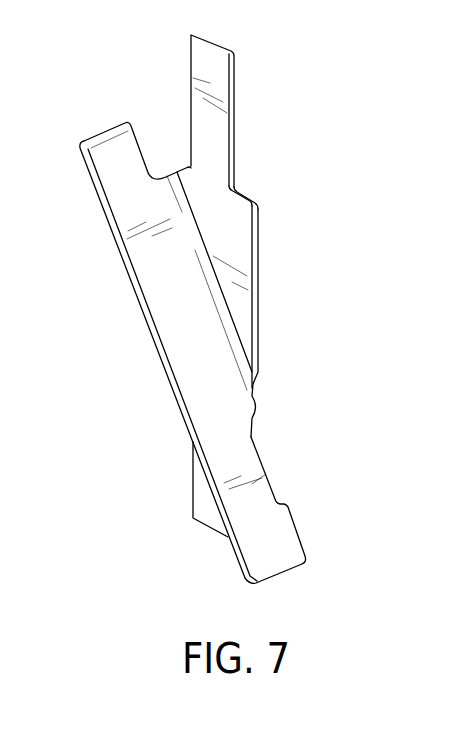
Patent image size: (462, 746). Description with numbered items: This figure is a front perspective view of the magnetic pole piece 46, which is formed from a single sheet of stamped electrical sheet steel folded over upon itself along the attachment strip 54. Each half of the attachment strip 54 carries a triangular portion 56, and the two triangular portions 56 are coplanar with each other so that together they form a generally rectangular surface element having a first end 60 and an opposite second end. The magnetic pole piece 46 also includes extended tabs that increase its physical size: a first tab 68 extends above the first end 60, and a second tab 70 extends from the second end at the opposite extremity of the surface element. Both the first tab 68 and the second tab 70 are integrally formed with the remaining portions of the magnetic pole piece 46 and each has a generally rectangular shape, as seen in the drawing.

The magnetic pole piece 46 is at (301, 191).
The attachment strip 54 is at (160, 313).
The triangular portion 56 is at (237, 247).
The first end 60 is at (248, 191).
The first tab 68 is at (234, 119).
The second tab 70 is at (201, 497).